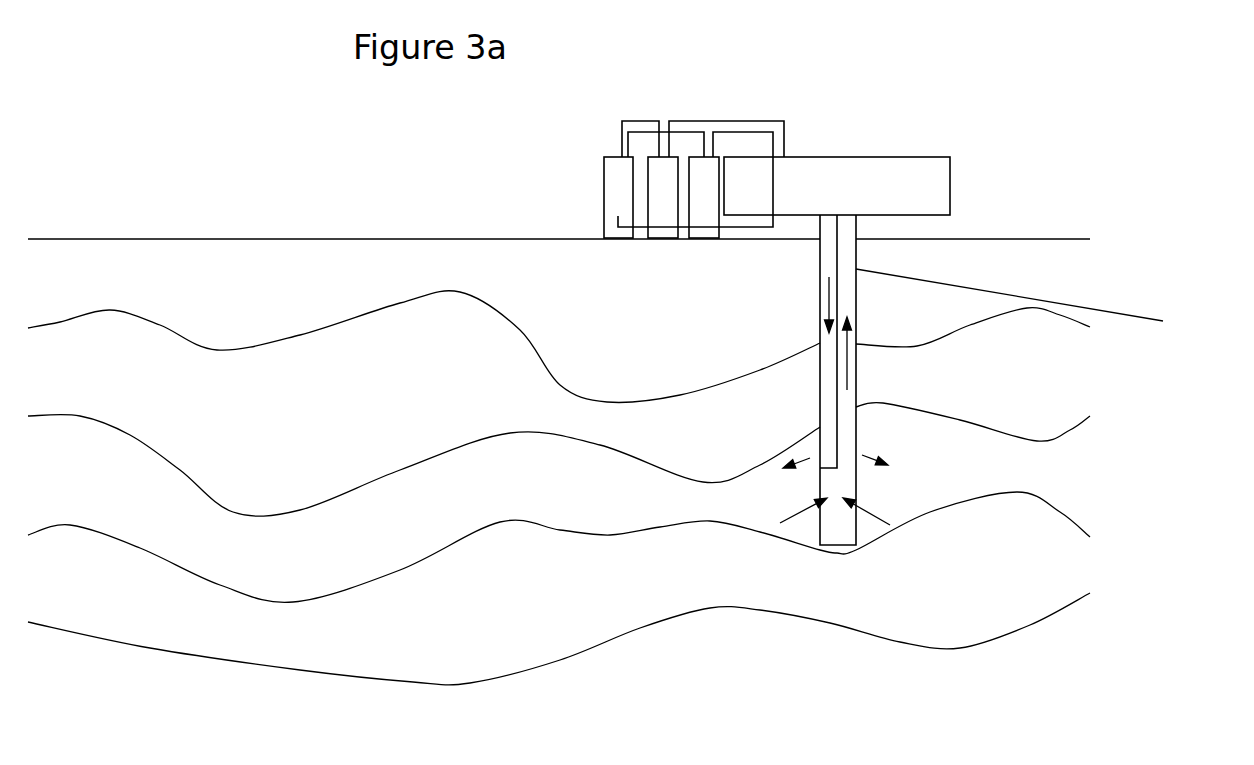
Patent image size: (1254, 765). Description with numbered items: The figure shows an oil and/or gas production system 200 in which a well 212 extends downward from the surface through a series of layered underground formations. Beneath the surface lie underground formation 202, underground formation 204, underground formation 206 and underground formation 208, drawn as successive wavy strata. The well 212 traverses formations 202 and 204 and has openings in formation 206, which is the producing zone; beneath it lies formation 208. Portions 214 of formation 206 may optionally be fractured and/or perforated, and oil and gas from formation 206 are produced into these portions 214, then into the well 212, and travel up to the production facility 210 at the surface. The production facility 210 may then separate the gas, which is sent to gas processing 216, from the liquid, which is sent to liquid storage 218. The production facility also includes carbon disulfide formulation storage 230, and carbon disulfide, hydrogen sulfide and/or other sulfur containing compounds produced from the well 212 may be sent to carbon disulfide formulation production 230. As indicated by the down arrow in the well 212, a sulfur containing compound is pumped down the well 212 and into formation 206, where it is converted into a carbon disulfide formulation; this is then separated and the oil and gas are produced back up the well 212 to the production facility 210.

The system 200 is at (431, 174).
The underground formation 202 is at (559, 344).
The underground formation 204 is at (559, 437).
The underground formation 206 is at (559, 520).
The underground formation 208 is at (559, 608).
The production facility 210 is at (817, 197).
The well 212 is at (1050, 303).
The portions of formation 214 is at (788, 488).
The gas processing 216 is at (701, 180).
The liquid storage 218 is at (666, 180).
The carbon disulfide formulation storage 230 is at (618, 171).